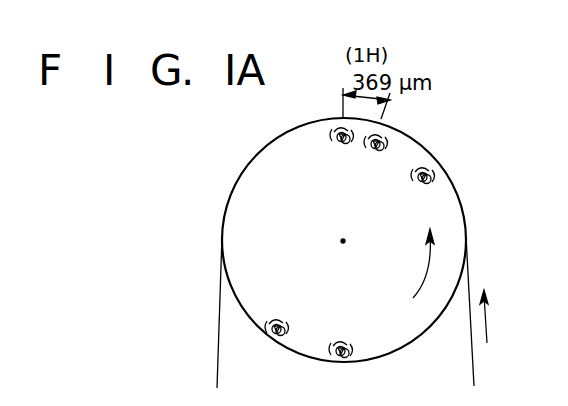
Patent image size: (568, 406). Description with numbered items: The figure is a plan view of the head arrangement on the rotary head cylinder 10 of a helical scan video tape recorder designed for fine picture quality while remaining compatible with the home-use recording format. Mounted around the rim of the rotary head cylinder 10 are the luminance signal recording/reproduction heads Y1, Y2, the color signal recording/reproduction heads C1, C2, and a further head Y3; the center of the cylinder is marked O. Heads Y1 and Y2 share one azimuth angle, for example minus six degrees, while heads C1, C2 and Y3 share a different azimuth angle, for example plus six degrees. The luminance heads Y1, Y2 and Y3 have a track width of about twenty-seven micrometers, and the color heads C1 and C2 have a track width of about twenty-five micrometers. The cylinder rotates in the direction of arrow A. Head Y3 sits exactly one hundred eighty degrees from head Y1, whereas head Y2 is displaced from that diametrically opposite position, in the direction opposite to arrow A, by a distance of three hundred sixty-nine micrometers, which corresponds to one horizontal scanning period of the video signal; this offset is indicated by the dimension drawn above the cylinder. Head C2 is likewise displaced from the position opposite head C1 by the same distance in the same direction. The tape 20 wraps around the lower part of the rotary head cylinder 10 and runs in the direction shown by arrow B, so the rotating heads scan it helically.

The rotary head cylinder 10 is at (447, 204).
The tape 20 is at (468, 268).
The drum center O is at (362, 231).
The arrow A is at (419, 263).
The arrow B is at (492, 316).
The luminance signal recording/reproduction head Y1 is at (336, 341).
The luminance signal recording/reproduction head Y2 is at (385, 132).
The head Y3 is at (331, 127).
The color signal recording/reproduction head C1 is at (269, 324).
The color signal recording/reproduction head C2 is at (436, 166).